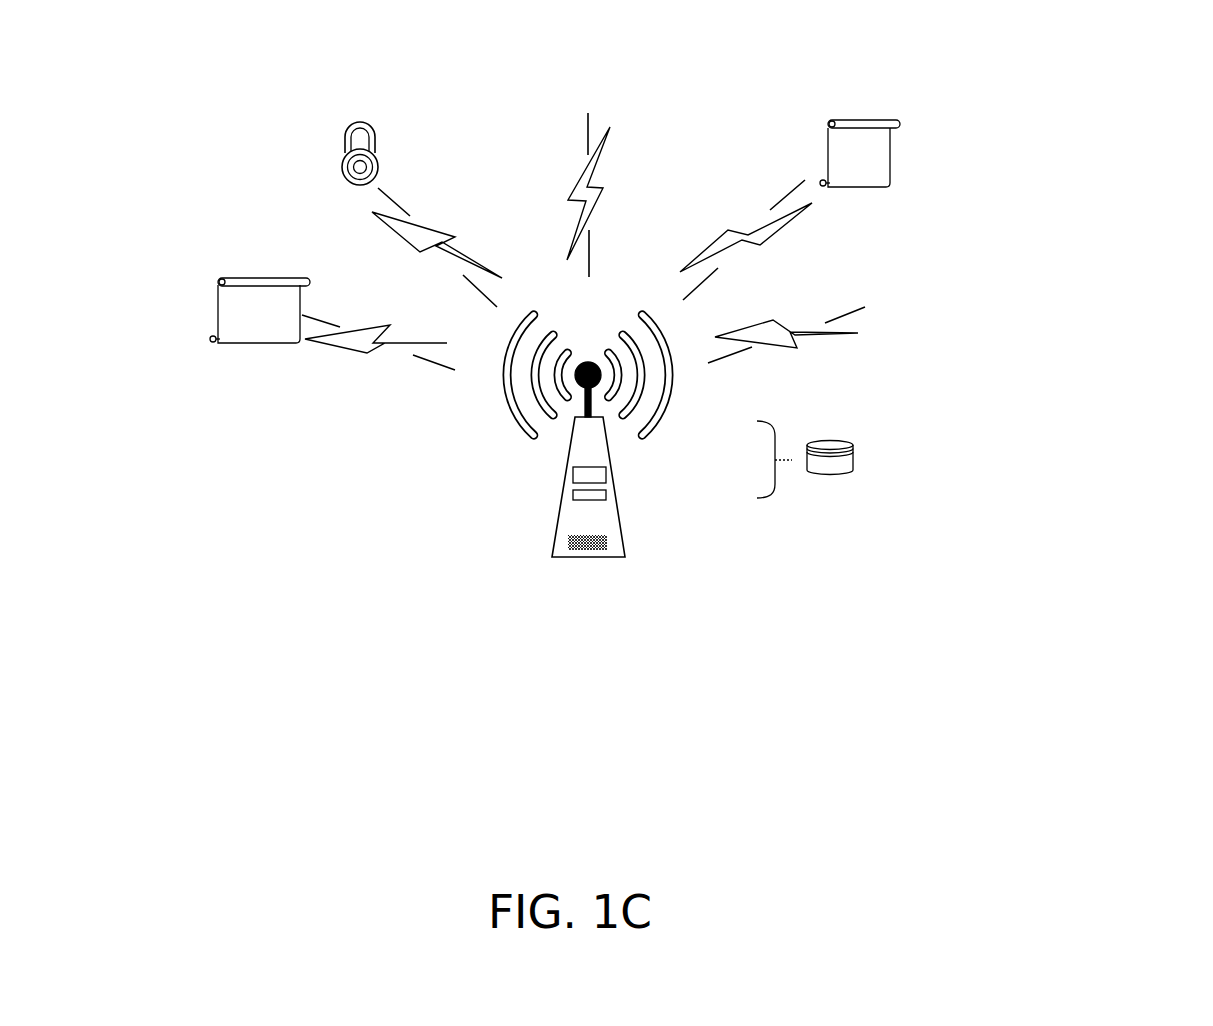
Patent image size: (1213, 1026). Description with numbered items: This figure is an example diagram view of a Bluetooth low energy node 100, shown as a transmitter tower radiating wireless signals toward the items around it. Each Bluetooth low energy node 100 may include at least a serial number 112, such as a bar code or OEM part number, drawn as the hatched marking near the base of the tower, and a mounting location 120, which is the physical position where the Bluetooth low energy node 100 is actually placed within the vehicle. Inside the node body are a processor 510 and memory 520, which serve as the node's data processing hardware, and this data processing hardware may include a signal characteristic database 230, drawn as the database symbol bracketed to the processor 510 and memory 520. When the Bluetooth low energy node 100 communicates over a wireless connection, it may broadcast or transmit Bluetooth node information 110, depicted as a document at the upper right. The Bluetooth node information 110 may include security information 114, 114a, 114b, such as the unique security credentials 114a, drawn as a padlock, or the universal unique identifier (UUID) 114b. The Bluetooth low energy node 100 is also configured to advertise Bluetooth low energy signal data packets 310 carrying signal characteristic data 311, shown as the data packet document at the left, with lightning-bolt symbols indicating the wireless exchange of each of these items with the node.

The Bluetooth low energy node 100 is at (1072, 100).
The Bluetooth node information 110 is at (828, 125).
The serial number 112 is at (567, 556).
The security information 114 is at (426, 157).
The unique security credentials 114a is at (342, 140).
The universal unique identifier (UUID) 114b is at (552, 68).
The mounting location 120 is at (625, 469).
The signal characteristic database 230 is at (855, 453).
The Bluetooth low energy signal data packets 310 is at (285, 296).
The signal characteristic data 311 is at (218, 283).
The processor 510 is at (606, 475).
The memory 520 is at (606, 493).